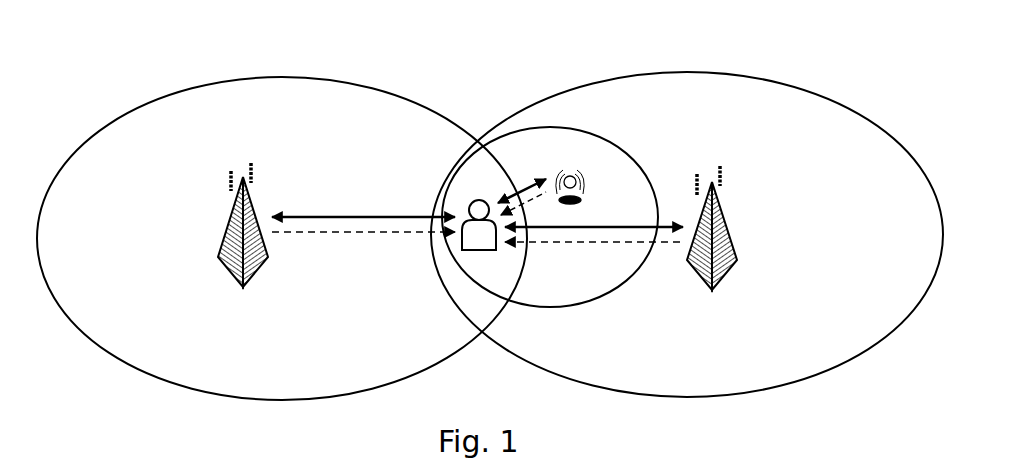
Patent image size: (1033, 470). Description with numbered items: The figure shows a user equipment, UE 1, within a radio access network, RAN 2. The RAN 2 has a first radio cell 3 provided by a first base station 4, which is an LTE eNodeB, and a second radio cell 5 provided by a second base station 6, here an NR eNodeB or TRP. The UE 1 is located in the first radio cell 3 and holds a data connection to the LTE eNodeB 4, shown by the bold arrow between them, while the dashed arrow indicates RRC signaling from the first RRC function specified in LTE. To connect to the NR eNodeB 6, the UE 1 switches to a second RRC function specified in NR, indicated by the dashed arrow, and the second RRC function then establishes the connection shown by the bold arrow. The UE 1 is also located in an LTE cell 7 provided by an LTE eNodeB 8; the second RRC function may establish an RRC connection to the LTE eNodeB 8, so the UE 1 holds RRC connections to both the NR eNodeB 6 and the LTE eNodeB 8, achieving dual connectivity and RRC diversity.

The user equipment 1 is at (470, 204).
The radio access network 2 is at (452, 60).
The first radio cell 3 is at (238, 80).
The first base station 4 is at (253, 200).
The second radio cell 5 is at (622, 142).
The second base station 6 is at (585, 181).
The LTE cell 7 is at (815, 92).
The LTE eNodeB 8 is at (722, 218).